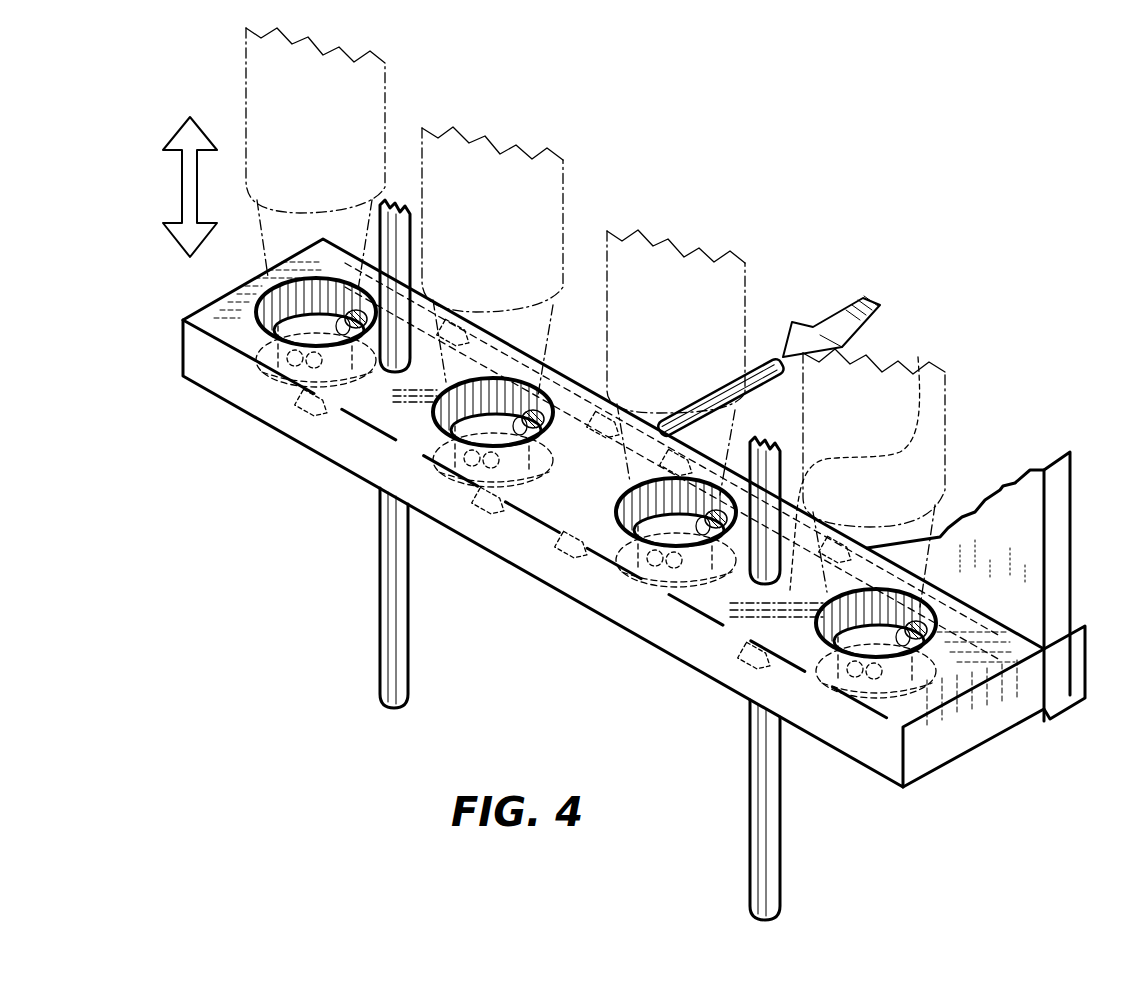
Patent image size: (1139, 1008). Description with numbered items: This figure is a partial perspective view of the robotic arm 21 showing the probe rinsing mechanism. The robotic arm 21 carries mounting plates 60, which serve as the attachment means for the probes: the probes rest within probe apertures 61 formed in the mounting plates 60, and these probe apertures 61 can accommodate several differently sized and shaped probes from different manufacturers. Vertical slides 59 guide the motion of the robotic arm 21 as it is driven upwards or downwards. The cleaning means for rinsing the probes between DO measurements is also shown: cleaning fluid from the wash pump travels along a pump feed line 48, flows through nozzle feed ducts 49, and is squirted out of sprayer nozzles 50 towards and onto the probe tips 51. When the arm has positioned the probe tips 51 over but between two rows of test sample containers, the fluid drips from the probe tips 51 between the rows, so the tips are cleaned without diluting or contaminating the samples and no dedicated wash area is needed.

The robotic arm 21 is at (991, 586).
The pump feed line 48 is at (757, 360).
The nozzle feed ducts 49 is at (572, 440).
The sprayer nozzles 50 is at (332, 285).
The probe tips 51 is at (293, 447).
The vertical slides 59 is at (378, 593).
The mounting plates 60 is at (940, 743).
The probe apertures 61 is at (215, 337).